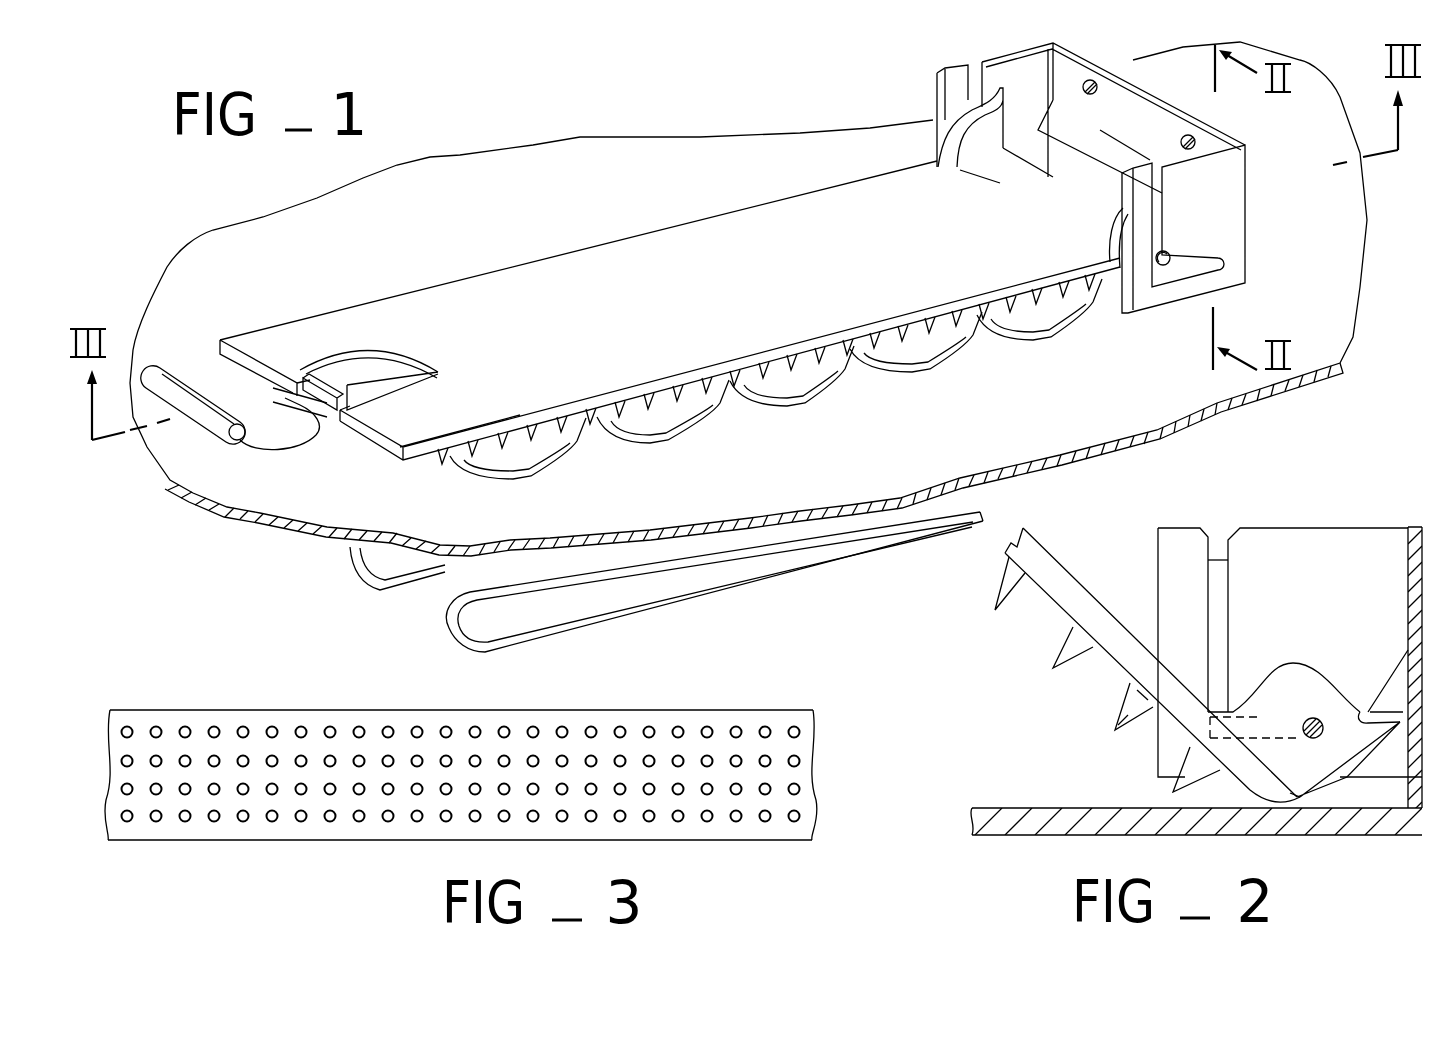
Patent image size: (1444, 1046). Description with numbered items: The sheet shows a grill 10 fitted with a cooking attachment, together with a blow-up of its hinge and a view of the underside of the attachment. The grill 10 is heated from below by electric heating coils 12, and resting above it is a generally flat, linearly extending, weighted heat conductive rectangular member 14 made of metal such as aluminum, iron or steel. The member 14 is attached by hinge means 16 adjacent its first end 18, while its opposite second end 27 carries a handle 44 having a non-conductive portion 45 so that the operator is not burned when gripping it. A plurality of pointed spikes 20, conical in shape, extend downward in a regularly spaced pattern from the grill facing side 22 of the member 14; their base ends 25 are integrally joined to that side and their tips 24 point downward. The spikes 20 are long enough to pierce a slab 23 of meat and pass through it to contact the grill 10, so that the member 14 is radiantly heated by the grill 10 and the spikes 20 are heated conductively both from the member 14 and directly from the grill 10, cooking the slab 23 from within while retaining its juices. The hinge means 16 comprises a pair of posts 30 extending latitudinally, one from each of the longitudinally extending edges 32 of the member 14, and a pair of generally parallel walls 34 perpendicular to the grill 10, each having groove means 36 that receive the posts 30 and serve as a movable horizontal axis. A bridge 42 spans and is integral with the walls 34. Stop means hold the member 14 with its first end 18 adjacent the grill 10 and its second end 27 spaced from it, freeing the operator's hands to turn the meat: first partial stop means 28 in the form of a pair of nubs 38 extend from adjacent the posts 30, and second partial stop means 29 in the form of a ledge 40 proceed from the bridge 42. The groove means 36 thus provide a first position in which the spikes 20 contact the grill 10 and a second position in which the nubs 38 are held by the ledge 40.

In FIG. 1, the grill 10 is at (1057, 410).
In FIG. 2, the grill 10 is at (1015, 807).
In FIG. 1, the electric heating coils 12 is at (745, 580).
In FIG. 1, the weighted heat conductive rectangular member 14 is at (670, 310).
In FIG. 2, the weighted heat conductive rectangular member 14 is at (1192, 655).
In FIG. 3, the weighted heat conductive rectangular member 14 is at (507, 747).
In FIG. 1, the hinge means 16 is at (1082, 173).
In FIG. 2, the hinge means 16 is at (1290, 618).
In FIG. 1, the first end 18 is at (967, 183).
In FIG. 1, the pointed spikes 20 is at (648, 398).
In FIG. 2, the pointed spikes 20 is at (1015, 590).
In FIG. 3, the pointed spikes 20 is at (793, 726).
In FIG. 3, the grill facing side 22 is at (805, 745).
In FIG. 1, the slab of meat 23 is at (910, 353).
In FIG. 2, the tip 24 is at (1117, 726).
In FIG. 2, the base ends 25 is at (1140, 686).
In FIG. 1, the second end 27 is at (270, 358).
In FIG. 1, the first partial stop means 28 is at (993, 152).
In FIG. 2, the first partial stop means 28 is at (1360, 762).
In FIG. 1, the second partial stop means 29 is at (1110, 153).
In FIG. 2, the second partial stop means 29 is at (1388, 677).
In FIG. 1, the posts 30 is at (1170, 250).
In FIG. 2, the posts 30 is at (1306, 720).
In FIG. 1, the longitudinally extending edges 32 is at (540, 260).
In FIG. 1, the walls 34 is at (1000, 60).
In FIG. 2, the walls 34 is at (1327, 528).
In FIG. 2, the groove means 36 is at (1218, 537).
In FIG. 1, the nubs 38 is at (1004, 96).
In FIG. 2, the nubs 38 is at (1398, 722).
In FIG. 2, the ledge 40 is at (1357, 708).
In FIG. 1, the bridge 42 is at (1128, 100).
In FIG. 1, the handle 44 is at (207, 433).
In FIG. 1, the non-conductive portion 45 is at (230, 437).